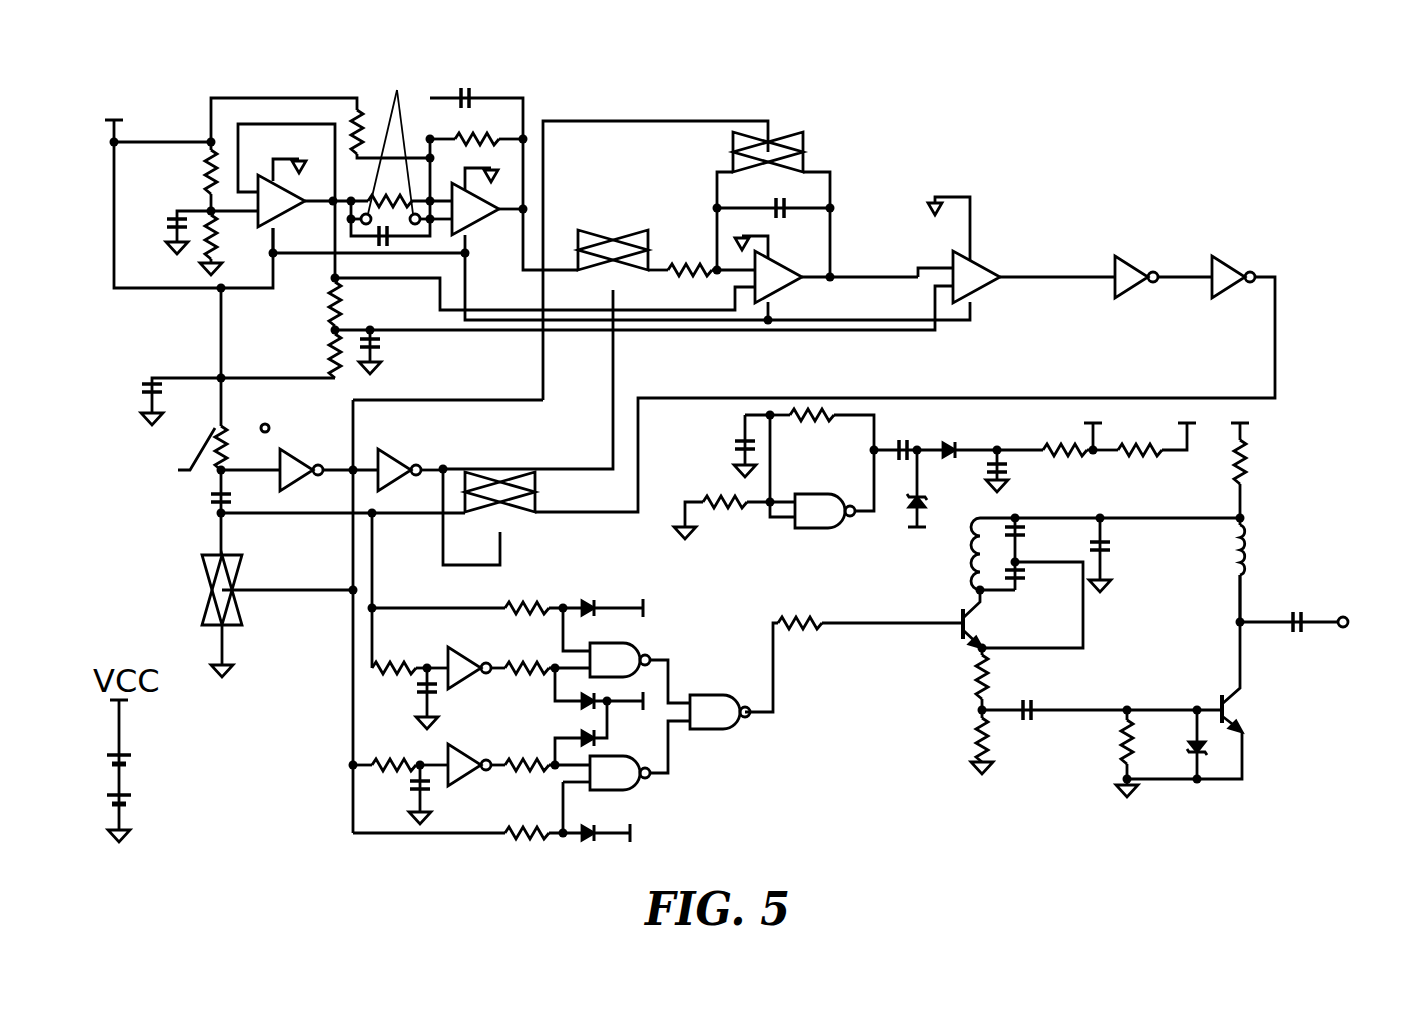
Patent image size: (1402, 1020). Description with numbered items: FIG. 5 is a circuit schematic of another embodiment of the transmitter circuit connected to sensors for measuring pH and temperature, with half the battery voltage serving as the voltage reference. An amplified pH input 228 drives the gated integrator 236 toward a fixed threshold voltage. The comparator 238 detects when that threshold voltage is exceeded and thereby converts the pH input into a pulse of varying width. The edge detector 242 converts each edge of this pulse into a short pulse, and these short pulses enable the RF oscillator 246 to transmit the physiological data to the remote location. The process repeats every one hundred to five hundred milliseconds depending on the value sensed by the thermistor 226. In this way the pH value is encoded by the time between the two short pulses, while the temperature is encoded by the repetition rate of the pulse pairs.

The thermistor 226 is at (184, 442).
The amplified pH input 228 is at (312, 348).
The gated integrator 236 is at (805, 374).
The comparator 238 is at (1057, 344).
The edge detector 242 is at (533, 741).
The RF oscillator 246 is at (1167, 665).